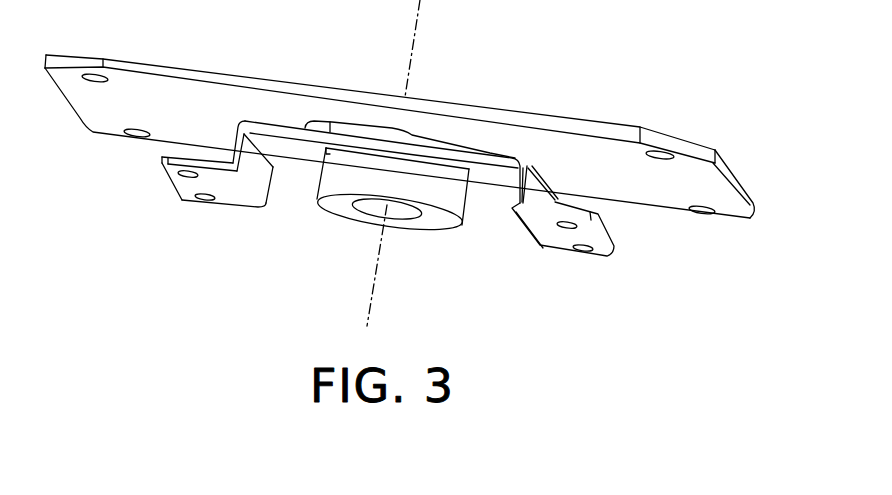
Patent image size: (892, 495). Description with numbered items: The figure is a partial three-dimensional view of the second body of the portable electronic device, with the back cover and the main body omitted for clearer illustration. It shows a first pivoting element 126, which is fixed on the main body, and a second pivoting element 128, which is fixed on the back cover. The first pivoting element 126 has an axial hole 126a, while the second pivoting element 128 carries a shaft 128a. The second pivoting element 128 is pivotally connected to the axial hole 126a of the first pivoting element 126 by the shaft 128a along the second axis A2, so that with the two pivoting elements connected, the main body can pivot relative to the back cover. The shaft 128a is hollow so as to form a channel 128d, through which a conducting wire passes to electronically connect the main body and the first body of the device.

The second pivoting element 128 is at (716, 190).
The shaft 128a is at (333, 176).
The channel 128d is at (408, 212).
The first pivoting element 126 is at (605, 238).
The axial hole 126a is at (453, 166).
The second axis A2 is at (418, 25).